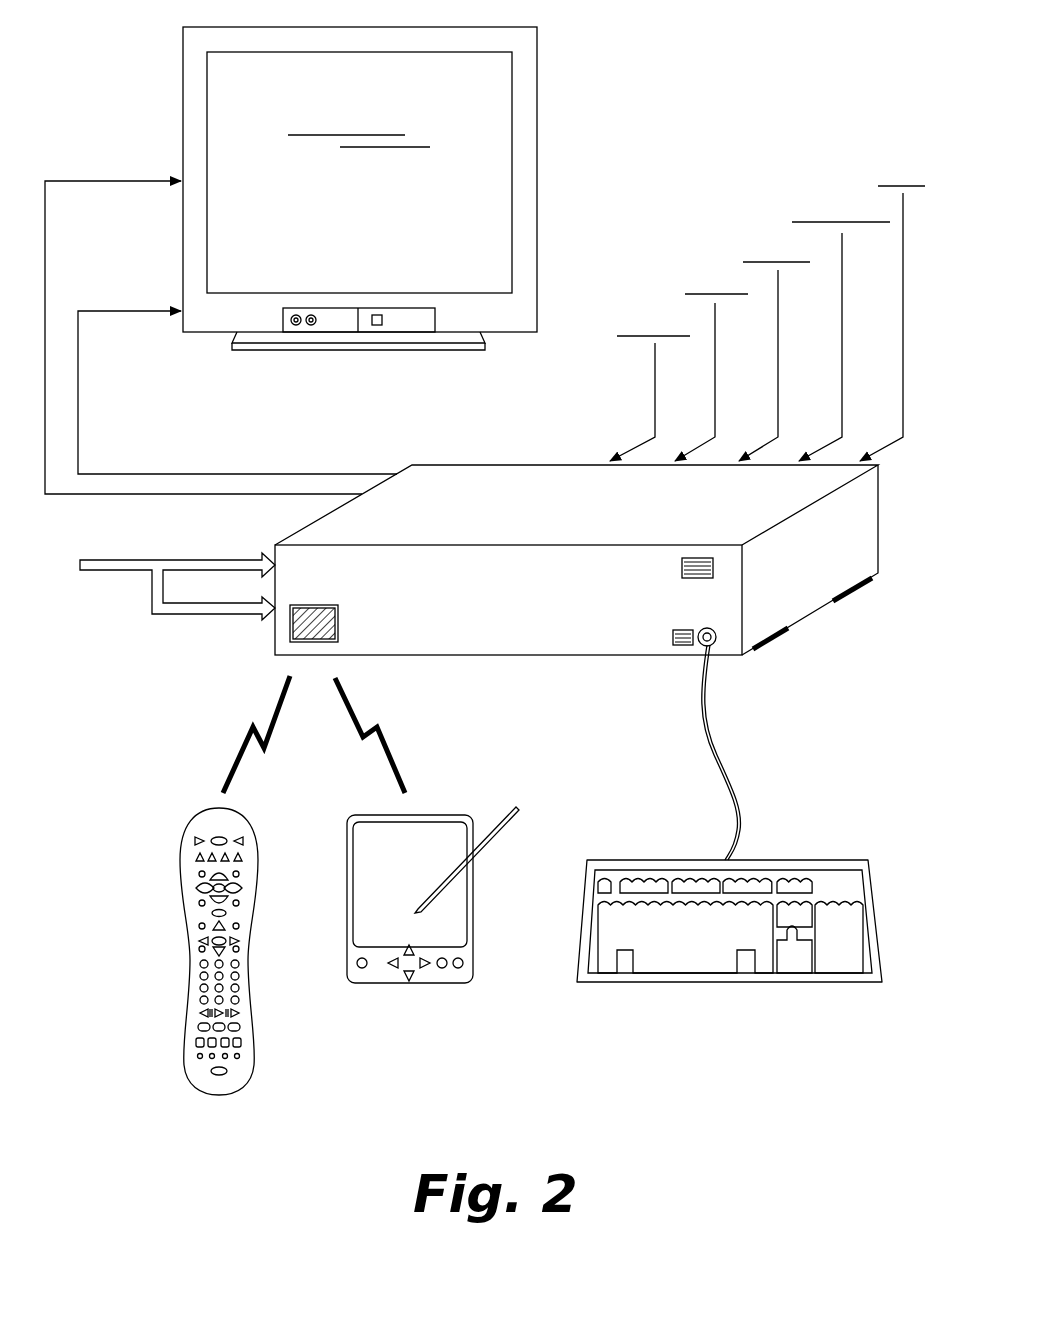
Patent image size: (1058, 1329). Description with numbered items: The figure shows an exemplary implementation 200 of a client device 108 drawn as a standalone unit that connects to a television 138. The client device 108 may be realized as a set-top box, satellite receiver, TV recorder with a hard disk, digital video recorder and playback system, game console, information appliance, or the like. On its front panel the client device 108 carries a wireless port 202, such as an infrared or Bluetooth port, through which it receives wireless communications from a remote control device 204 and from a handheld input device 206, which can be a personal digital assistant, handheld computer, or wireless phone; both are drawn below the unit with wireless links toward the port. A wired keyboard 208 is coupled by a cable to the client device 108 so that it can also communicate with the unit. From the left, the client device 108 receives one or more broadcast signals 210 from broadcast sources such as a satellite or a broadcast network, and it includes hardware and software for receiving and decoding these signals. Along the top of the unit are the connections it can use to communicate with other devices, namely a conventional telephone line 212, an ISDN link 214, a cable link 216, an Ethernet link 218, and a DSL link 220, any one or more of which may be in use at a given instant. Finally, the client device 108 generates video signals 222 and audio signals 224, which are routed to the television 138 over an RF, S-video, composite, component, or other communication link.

The exemplary implementation 200 is at (665, 54).
The client device 108 is at (477, 463).
The television 138 is at (481, 281).
The wireless port 202 is at (328, 603).
The remote control device 204 is at (183, 837).
The handheld input device 206 is at (430, 815).
The wired keyboard 208 is at (778, 860).
The broadcast signals 210 is at (134, 572).
The telephone line 212 is at (655, 293).
The ISDN link 214 is at (717, 253).
The cable link 216 is at (778, 218).
The Ethernet link 218 is at (842, 180).
The DSL link 220 is at (903, 145).
The video signal(s) 222 is at (140, 214).
The audio signal(s) 224 is at (140, 348).